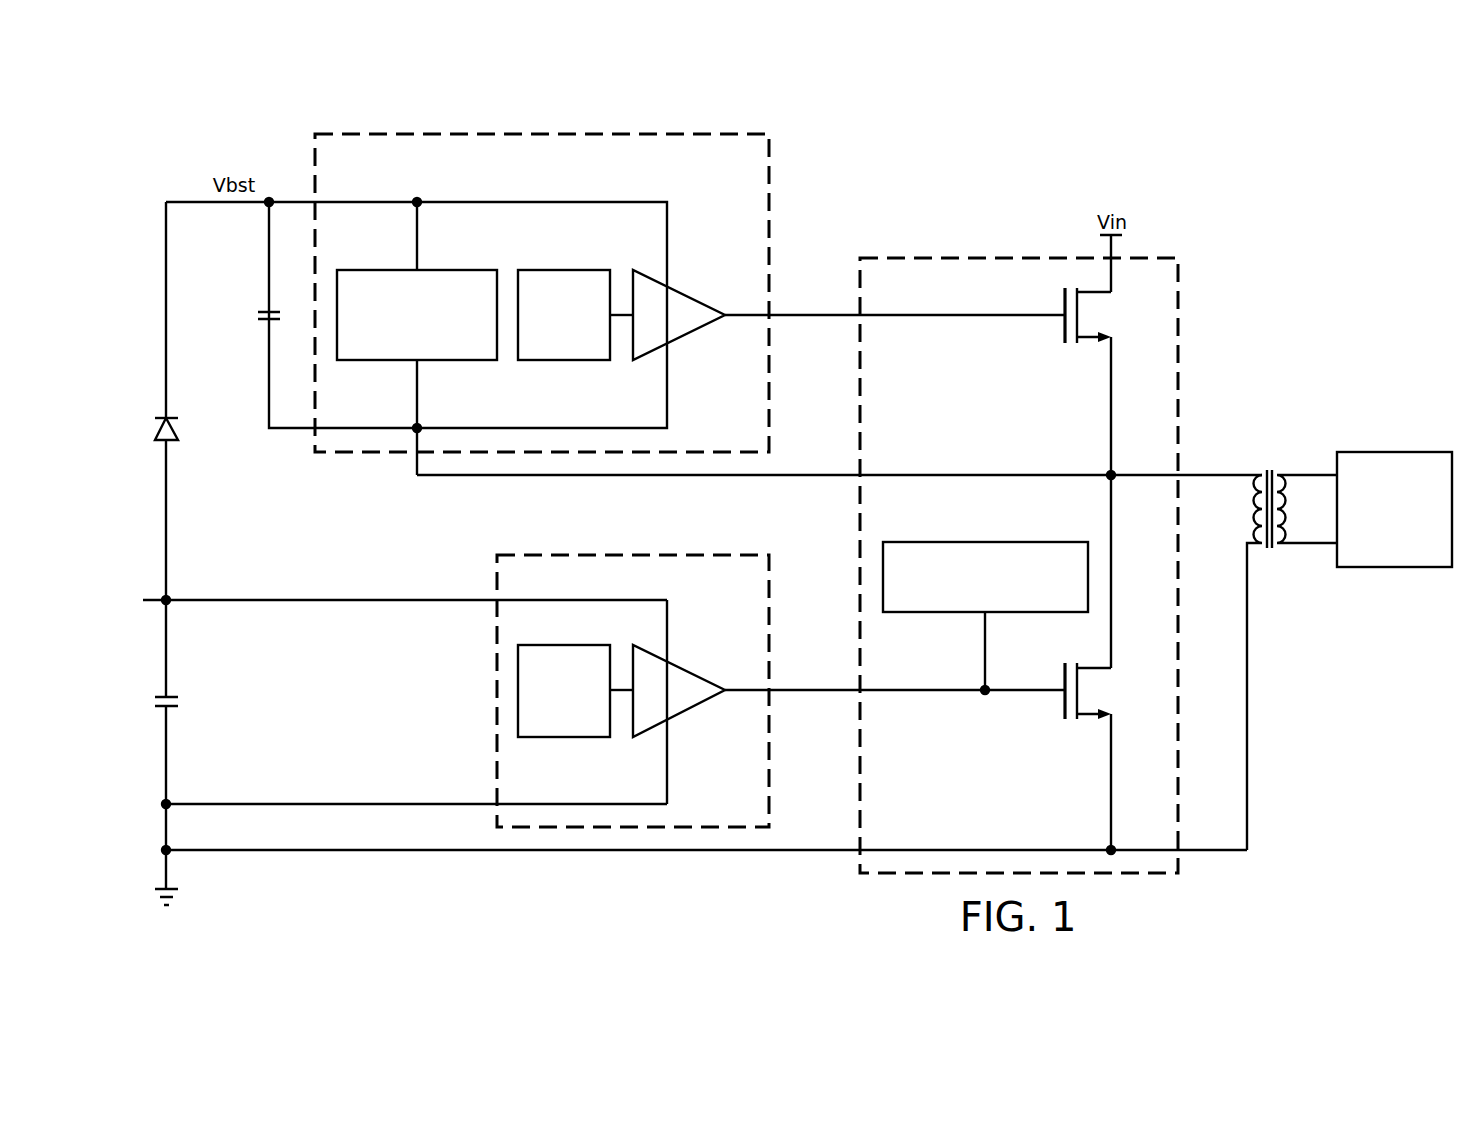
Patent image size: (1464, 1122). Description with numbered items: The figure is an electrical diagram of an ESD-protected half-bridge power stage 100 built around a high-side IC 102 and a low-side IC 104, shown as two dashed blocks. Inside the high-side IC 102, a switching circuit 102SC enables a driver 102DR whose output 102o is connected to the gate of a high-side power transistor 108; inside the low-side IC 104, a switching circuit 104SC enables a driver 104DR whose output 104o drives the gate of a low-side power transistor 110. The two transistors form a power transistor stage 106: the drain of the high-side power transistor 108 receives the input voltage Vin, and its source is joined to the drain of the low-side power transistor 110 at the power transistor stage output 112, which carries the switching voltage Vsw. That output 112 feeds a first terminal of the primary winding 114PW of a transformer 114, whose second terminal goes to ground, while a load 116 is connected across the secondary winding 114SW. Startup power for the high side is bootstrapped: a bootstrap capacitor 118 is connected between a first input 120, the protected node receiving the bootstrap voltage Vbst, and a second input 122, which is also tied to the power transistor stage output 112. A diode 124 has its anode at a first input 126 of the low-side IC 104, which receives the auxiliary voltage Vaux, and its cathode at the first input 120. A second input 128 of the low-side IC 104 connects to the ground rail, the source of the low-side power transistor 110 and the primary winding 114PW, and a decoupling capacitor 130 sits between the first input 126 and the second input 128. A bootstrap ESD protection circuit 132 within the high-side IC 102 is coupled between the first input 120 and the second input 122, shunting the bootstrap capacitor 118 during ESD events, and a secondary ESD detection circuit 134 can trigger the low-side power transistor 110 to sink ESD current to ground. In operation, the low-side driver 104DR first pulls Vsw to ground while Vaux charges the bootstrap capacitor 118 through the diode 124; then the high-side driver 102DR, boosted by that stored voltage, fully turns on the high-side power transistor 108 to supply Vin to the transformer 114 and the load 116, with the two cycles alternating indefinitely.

The half-bridge power stage 100 is at (1292, 138).
The high-side IC 102 is at (402, 126).
The low-side IC 104 is at (572, 546).
The power transistor stage 106 is at (1036, 252).
The high-side power transistor 108 is at (1062, 305).
The low-side power transistor 110 is at (1062, 705).
The power transistor stage output 112 is at (1132, 473).
The transformer 114 is at (1284, 398).
The primary winding 114PW is at (1260, 473).
The secondary winding 114SW is at (1280, 546).
The load 116 is at (1395, 450).
The bootstrap capacitor 118 is at (258, 312).
The first input 120 is at (460, 200).
The second input 122 is at (540, 426).
The diode 124 is at (155, 428).
The first input 126 is at (337, 598).
The second input 128 is at (338, 802).
The decoupling capacitor 130 is at (152, 702).
The bootstrap ESD protection circuit 132 is at (383, 268).
The secondary ESD detection circuit 134 is at (997, 540).
The switching circuit 102SC is at (563, 268).
The driver 102DR is at (695, 300).
The output 102o is at (805, 313).
The switching circuit 104SC is at (563, 739).
The driver 104DR is at (692, 710).
The output 104o is at (805, 692).